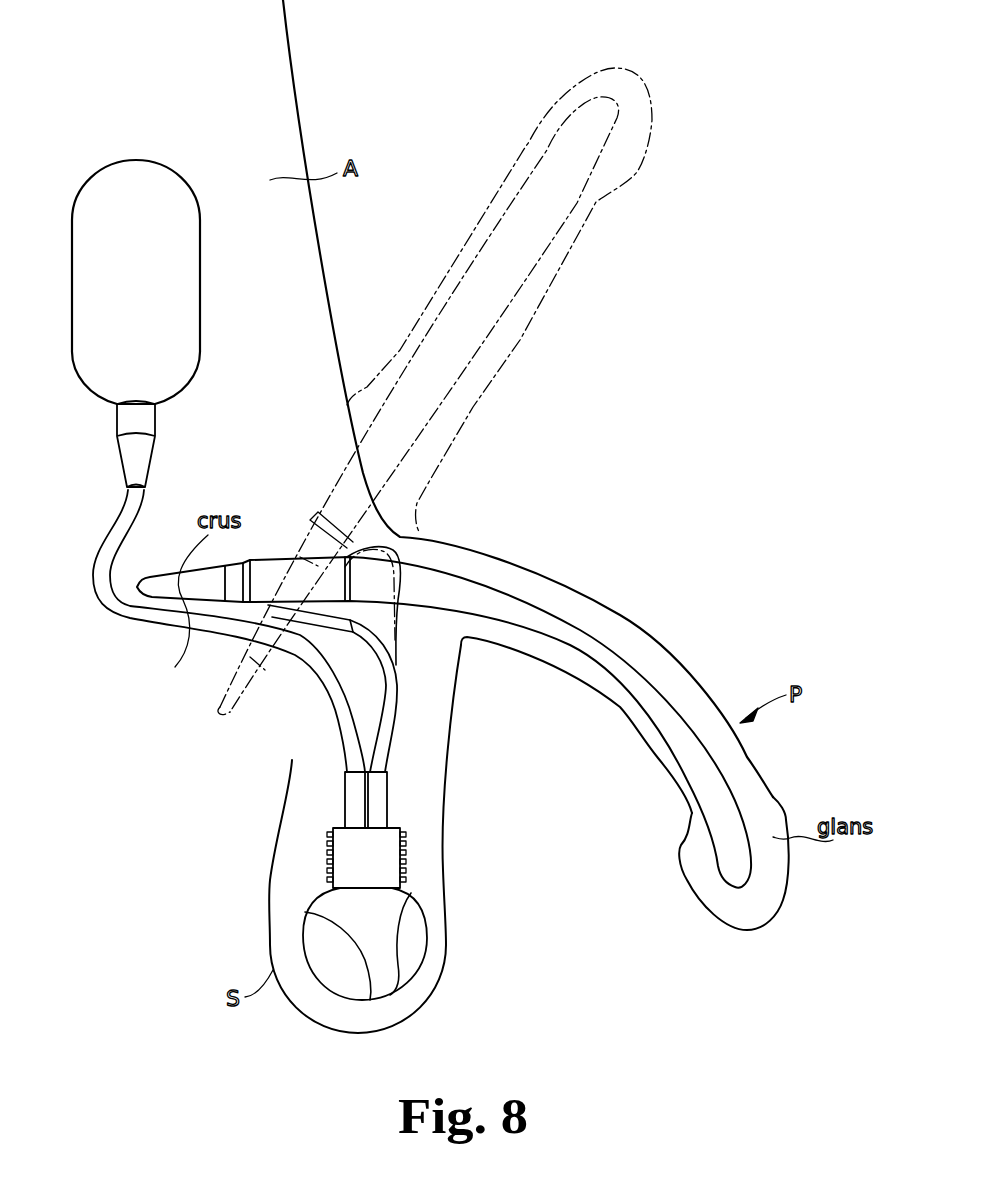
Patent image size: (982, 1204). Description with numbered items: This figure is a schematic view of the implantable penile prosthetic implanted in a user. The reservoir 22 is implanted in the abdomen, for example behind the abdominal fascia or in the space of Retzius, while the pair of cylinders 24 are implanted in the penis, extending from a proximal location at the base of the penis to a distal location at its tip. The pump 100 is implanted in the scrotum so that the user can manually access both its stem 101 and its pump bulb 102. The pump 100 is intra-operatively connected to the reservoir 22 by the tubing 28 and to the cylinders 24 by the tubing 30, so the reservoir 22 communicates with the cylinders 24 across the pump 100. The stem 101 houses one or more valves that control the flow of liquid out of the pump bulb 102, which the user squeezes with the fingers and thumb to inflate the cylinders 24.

The reservoir 22 is at (193, 280).
The inflatable members 24 is at (556, 240).
The tubing 28 is at (133, 621).
The tubing 30 is at (385, 717).
The pump 100 is at (355, 886).
The stem 101 is at (385, 862).
The pump bulb 102 is at (427, 933).